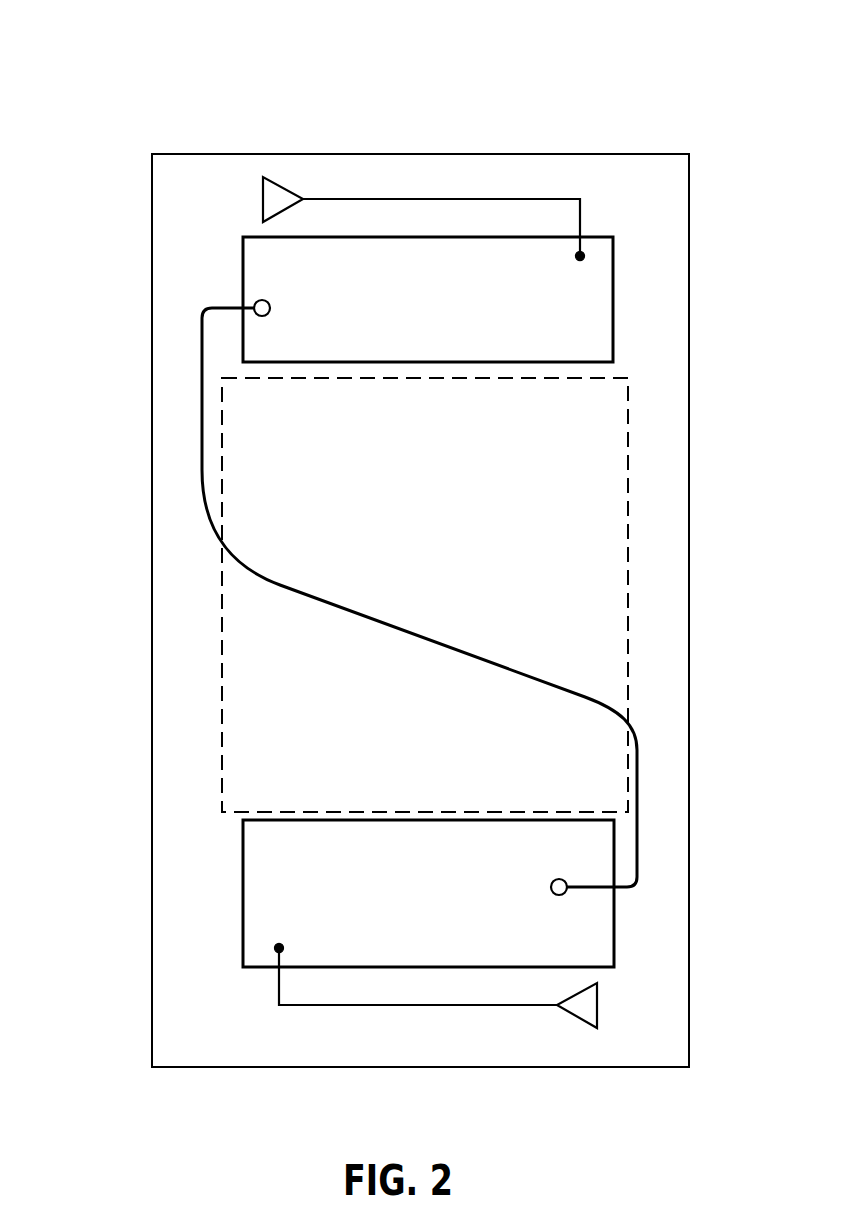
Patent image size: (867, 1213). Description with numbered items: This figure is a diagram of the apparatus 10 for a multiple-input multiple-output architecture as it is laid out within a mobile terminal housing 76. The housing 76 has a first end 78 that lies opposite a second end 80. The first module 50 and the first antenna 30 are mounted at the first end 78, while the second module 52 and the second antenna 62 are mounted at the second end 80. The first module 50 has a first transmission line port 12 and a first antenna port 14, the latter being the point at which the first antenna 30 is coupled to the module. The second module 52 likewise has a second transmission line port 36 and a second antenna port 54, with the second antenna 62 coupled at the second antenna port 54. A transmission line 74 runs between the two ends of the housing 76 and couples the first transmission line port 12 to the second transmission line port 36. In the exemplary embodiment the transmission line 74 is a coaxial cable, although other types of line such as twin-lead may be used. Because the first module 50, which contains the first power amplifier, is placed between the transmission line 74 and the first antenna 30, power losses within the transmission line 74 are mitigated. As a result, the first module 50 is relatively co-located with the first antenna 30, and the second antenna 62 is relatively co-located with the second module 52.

The apparatus 10 is at (145, 78).
The first transmission line port 12 is at (256, 302).
The first antenna port 14 is at (582, 256).
The first antenna 30 is at (416, 198).
The second transmission line port 36 is at (566, 893).
The first module 50 is at (289, 277).
The second module 52 is at (602, 857).
The second antenna port 54 is at (279, 948).
The second antenna 62 is at (435, 1005).
The transmission line 74 is at (381, 620).
The mobile terminal housing 76 is at (657, 154).
The first end 78 is at (527, 115).
The second end 80 is at (338, 1080).